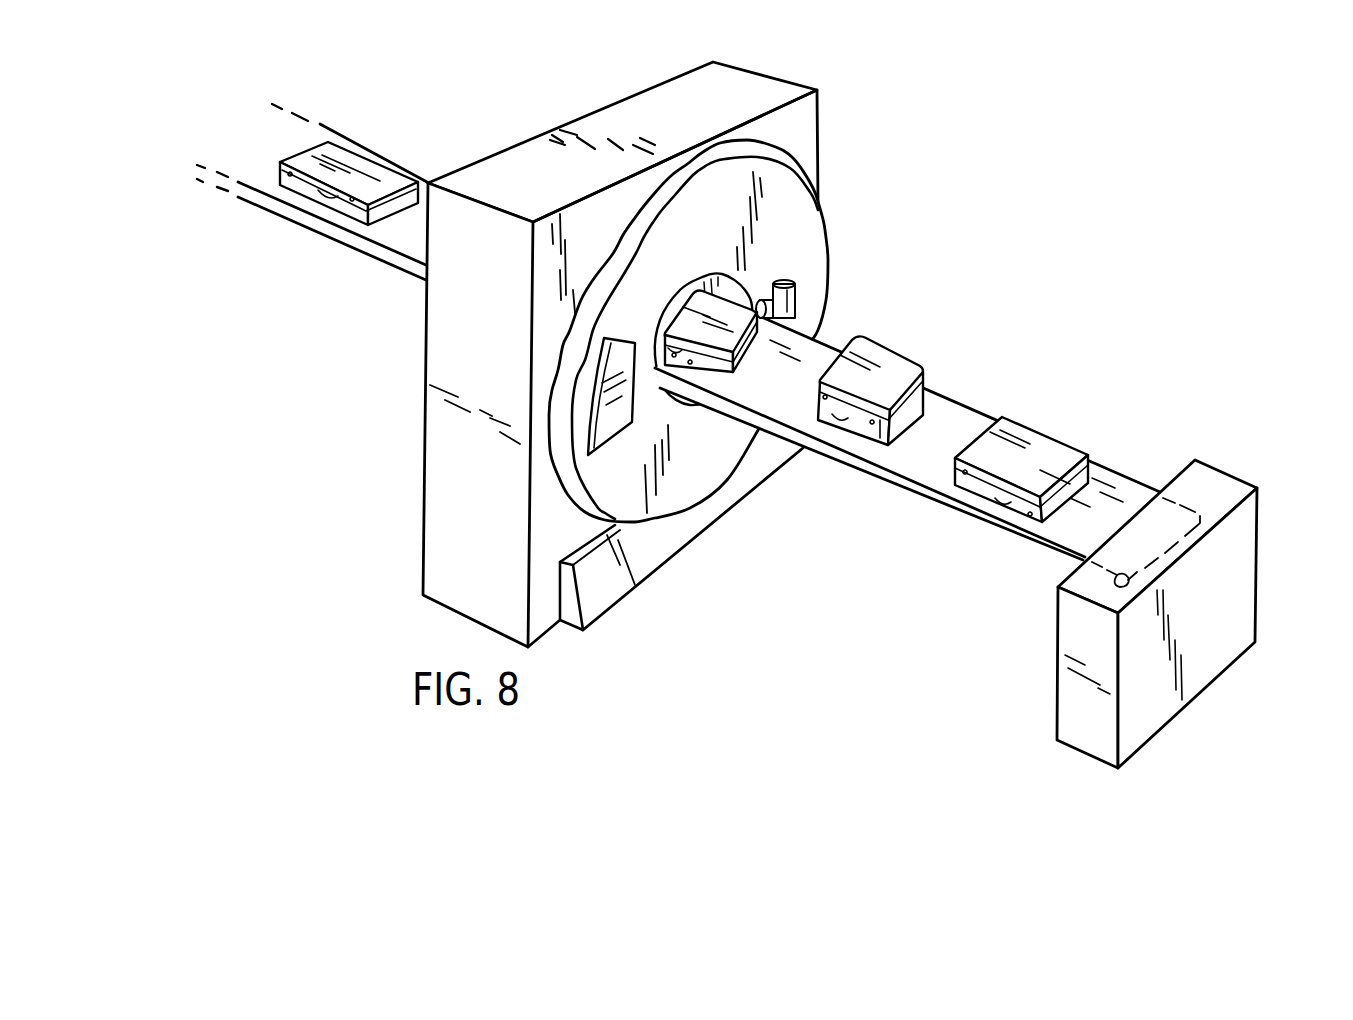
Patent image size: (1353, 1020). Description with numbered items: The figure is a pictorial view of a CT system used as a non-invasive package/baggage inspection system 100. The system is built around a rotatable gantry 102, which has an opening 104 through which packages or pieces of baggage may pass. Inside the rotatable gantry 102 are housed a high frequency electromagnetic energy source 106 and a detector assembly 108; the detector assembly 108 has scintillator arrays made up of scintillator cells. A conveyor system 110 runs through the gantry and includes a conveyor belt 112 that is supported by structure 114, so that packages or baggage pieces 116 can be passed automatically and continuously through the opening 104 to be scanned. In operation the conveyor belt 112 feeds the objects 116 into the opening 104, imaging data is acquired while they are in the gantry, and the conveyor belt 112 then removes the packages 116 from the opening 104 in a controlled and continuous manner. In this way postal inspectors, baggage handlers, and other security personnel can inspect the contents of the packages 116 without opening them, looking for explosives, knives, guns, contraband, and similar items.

The package/baggage inspection system 100 is at (724, 415).
The rotatable gantry 102 is at (808, 219).
The opening 104 is at (722, 285).
The high frequency electromagnetic energy source 106 is at (797, 300).
The detector assembly 108 is at (614, 428).
The conveyor system 110 is at (180, 209).
The conveyor belt 112 is at (385, 238).
The structure 114 is at (1245, 580).
The packages or baggage pieces 116 is at (362, 168).